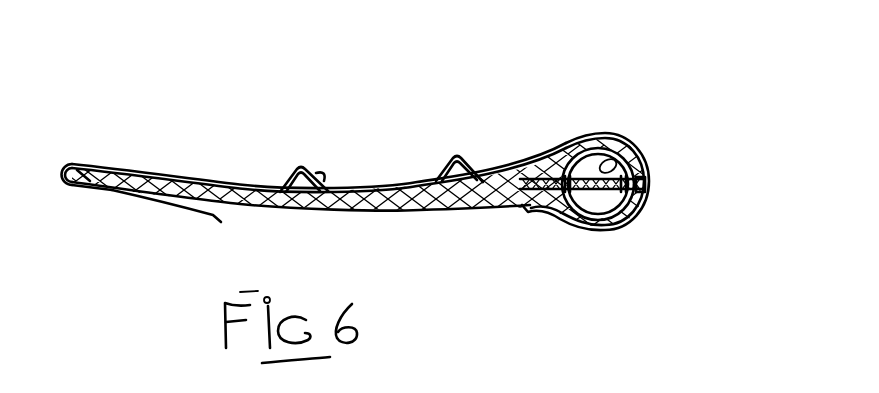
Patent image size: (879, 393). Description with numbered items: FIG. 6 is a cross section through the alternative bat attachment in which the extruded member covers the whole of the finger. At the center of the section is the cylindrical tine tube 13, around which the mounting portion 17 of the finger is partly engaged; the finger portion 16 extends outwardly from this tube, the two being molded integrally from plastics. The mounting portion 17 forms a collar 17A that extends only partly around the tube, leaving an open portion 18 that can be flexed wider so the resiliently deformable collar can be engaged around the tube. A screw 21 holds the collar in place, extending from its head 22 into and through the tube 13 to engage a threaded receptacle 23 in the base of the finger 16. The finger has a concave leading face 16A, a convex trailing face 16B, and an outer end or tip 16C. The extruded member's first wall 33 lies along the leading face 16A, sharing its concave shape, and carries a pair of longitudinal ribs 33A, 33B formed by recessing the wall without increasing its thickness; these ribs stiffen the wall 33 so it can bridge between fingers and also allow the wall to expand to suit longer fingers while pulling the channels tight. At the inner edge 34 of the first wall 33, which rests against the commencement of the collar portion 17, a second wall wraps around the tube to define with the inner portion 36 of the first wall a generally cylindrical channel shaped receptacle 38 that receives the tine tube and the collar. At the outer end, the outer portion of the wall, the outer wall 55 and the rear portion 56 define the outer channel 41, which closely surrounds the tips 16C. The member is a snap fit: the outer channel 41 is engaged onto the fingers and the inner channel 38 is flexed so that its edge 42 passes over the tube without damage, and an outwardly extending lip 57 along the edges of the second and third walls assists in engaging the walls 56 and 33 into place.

The cylindrical tube 13 is at (637, 153).
The finger portion 16 is at (380, 188).
The leading face 16A is at (293, 188).
The trailing face 16B is at (515, 207).
The tip 16C is at (72, 187).
The mounting portion 17 is at (623, 133).
The collar 17A is at (645, 210).
The open portion 18 is at (585, 233).
The screw 21 is at (580, 228).
The head 22 is at (648, 183).
The threaded receptacle 23 is at (538, 108).
The first wall 33 is at (190, 168).
The rib 33A is at (318, 210).
The rib 33B is at (460, 153).
The inner edge 34 is at (565, 145).
The inner portion 36 is at (595, 133).
The first channel shaped receptacle 38 is at (617, 228).
The second channel shaped receptacle 41 is at (125, 167).
The edge 42 is at (563, 225).
The outer wall 55 is at (73, 158).
The rear portion 56 is at (137, 202).
The lip 57 is at (207, 215).